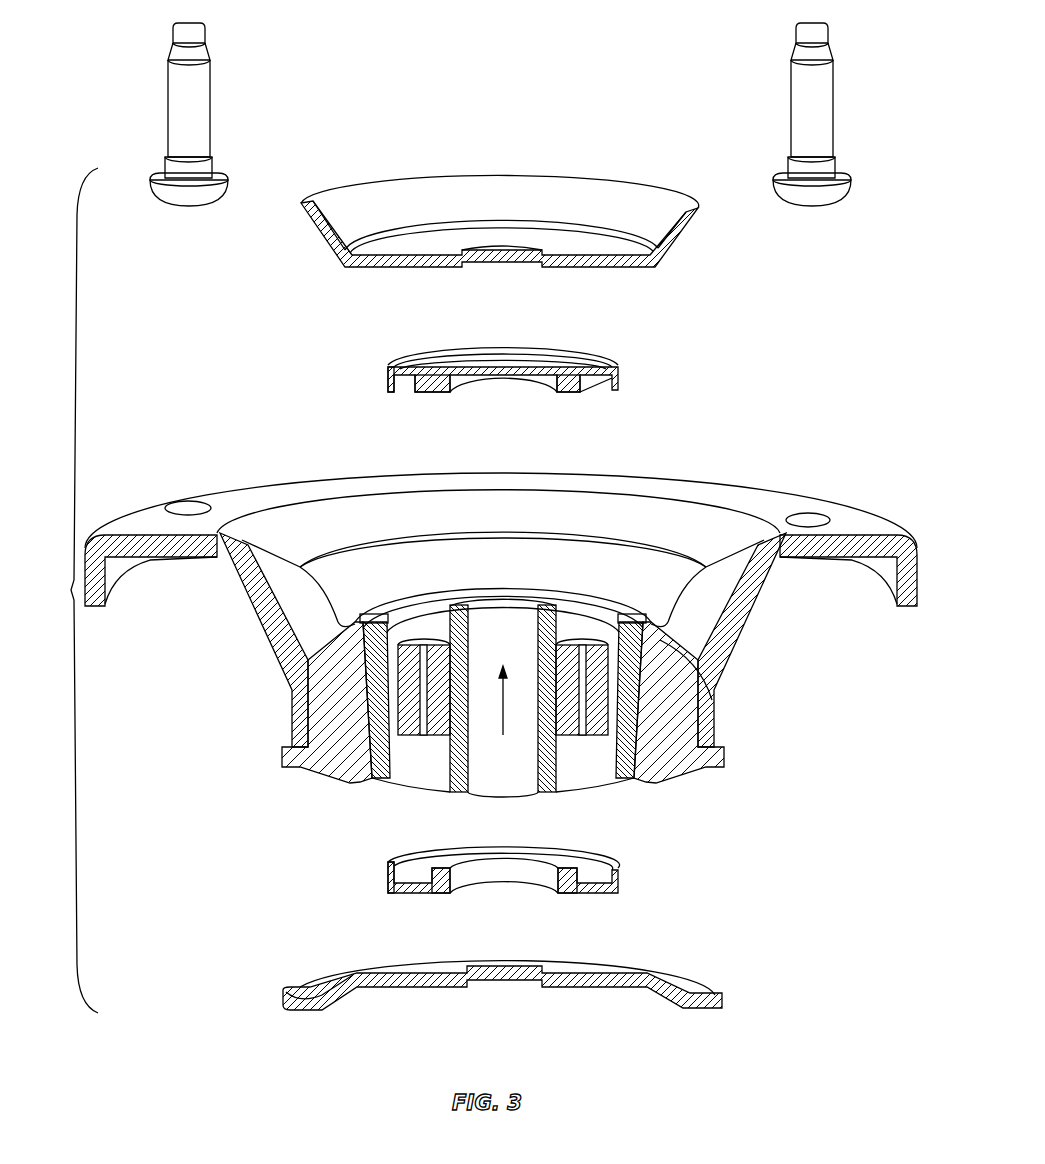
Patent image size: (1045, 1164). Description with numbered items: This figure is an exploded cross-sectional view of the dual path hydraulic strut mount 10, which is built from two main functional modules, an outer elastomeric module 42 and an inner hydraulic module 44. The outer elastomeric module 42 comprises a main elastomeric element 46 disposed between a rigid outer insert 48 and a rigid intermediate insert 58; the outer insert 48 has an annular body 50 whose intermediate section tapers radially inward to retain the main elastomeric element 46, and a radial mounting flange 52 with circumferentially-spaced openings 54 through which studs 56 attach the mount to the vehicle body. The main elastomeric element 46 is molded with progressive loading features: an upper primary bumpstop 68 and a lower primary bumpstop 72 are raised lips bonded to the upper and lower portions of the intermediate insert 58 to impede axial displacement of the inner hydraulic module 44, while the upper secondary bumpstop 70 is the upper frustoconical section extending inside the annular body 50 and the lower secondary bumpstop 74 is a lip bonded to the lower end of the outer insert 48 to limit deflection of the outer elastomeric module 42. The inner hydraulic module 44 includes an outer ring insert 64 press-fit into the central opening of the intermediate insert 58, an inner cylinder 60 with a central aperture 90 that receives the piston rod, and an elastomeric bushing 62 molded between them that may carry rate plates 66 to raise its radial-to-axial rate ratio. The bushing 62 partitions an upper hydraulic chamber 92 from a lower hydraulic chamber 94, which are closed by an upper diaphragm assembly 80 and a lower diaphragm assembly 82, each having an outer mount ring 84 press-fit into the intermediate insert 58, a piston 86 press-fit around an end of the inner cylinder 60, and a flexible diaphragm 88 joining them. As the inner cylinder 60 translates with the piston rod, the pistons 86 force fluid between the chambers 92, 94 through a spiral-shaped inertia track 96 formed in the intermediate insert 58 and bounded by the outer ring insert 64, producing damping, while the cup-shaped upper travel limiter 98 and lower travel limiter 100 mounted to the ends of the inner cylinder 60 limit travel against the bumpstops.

The dual path hydraulic strut mount 10 is at (71, 590).
The outer elastomeric module 42 is at (292, 527).
The inner hydraulic module 44 is at (700, 738).
The main elastomeric element 46 is at (690, 520).
The outer insert 48 is at (863, 567).
The annular body 50 is at (737, 625).
The radial mounting flange 52 is at (848, 530).
The openings 54 is at (188, 503).
The studs 56 is at (178, 110).
The intermediate insert 58 is at (712, 665).
The inner cylinder 60 is at (553, 605).
The elastomeric bushing 62 is at (408, 722).
The outer ring insert 64 is at (333, 700).
The rate plates 66 is at (650, 768).
The upper primary bumpstop 68 is at (395, 600).
The upper secondary bumpstop 70 is at (370, 570).
The lower primary bumpstop 72 is at (628, 778).
The lower secondary bumpstop 74 is at (283, 760).
The upper diaphragm assembly 80 is at (586, 363).
The lower diaphragm assembly 82 is at (608, 890).
The outer mount ring 84 is at (390, 375).
The piston 86 is at (540, 358).
The diaphragm 88 is at (418, 372).
The central aperture 90 is at (503, 705).
The upper hydraulic chamber 92 is at (503, 622).
The lower hydraulic chamber 94 is at (584, 701).
The inertia track 96 is at (372, 778).
The upper travel limiter 98 is at (570, 200).
The lower travel limiter 100 is at (300, 990).